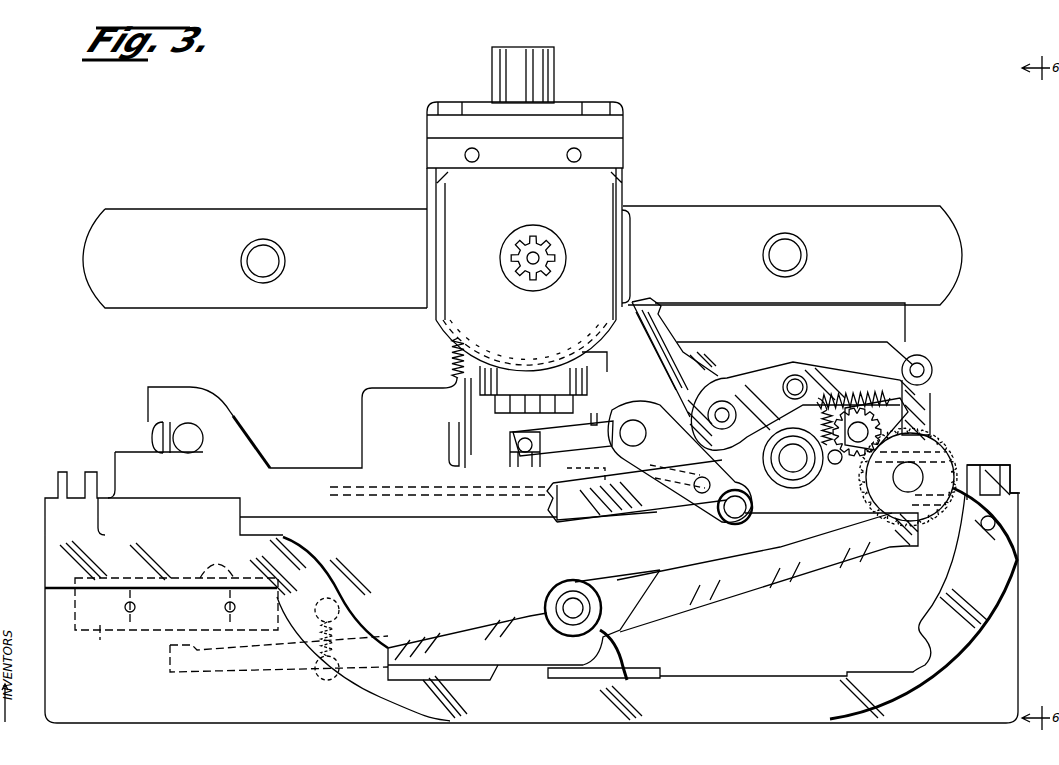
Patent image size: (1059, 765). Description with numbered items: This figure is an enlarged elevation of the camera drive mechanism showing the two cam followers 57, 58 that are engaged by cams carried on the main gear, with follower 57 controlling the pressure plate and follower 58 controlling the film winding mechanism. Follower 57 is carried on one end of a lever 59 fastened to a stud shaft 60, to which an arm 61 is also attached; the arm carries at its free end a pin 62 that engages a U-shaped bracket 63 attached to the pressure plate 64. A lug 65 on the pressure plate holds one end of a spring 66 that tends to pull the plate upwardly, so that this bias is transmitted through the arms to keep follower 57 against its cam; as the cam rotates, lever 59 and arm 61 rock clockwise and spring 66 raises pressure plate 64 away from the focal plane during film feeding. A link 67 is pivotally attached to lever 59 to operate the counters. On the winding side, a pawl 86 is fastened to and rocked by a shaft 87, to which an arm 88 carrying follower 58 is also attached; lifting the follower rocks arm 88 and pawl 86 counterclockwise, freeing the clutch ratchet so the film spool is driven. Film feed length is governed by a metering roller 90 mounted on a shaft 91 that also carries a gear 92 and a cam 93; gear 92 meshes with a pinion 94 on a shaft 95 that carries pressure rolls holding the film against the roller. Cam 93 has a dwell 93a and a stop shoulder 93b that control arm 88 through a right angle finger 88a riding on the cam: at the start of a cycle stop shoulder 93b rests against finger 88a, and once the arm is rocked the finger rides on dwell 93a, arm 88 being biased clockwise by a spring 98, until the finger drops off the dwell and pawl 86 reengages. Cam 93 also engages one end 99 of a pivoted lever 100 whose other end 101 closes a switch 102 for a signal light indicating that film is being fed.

The follower 57 is at (728, 520).
The follower 58 is at (808, 387).
The lever 59 is at (660, 488).
The stud shaft 60 is at (680, 461).
The arm 61 is at (594, 425).
The pin 62 is at (519, 440).
The U-shaped bracket 63 is at (510, 450).
The pressure plate 64 is at (470, 495).
The lug 65 is at (448, 455).
The spring 66 is at (460, 400).
The link 67 is at (590, 508).
The pawl 86 is at (665, 340).
The shaft 87 is at (726, 412).
The arm 88 is at (820, 372).
The right angle finger 88a is at (925, 420).
The metering roller 90 is at (940, 452).
The shaft 91 is at (925, 500).
The gear 92 is at (868, 482).
The cam 93 is at (953, 505).
The dwell 93a is at (960, 467).
The stop shoulder 93b is at (910, 548).
The pinion 94 is at (851, 455).
The shaft 95 is at (860, 428).
The spring 98 is at (826, 440).
The end of lever 99 is at (878, 555).
The pivoted lever 100 is at (545, 612).
The end of lever 101 is at (195, 672).
The switch 102 is at (150, 625).